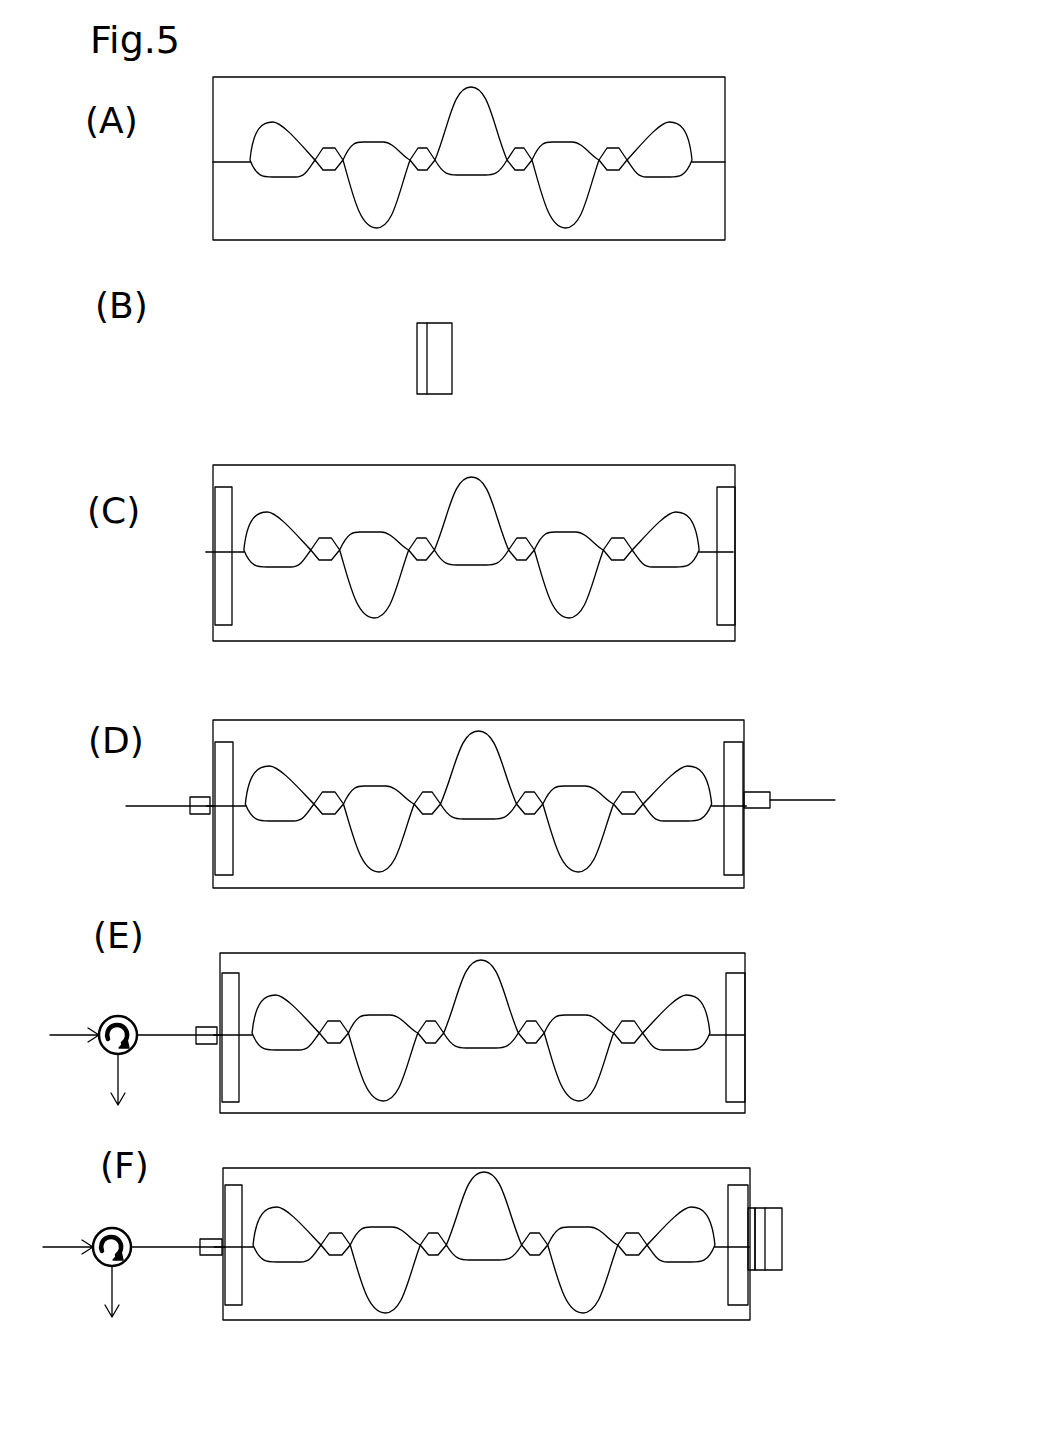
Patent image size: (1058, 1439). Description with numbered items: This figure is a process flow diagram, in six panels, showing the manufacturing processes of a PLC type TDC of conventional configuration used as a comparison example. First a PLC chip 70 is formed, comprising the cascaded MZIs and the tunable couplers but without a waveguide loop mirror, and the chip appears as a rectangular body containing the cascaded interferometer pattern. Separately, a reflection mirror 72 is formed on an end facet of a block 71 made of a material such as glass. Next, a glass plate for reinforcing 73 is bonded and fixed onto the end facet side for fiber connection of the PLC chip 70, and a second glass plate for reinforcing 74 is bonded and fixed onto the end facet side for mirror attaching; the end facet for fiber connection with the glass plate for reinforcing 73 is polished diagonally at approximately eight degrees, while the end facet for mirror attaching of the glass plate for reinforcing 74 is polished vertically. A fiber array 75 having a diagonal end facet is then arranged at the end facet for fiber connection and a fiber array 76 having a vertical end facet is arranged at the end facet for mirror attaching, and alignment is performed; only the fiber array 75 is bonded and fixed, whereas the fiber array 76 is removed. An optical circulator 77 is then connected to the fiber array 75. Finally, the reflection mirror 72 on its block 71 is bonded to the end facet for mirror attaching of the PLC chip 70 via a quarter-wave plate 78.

The PLC chip 70 is at (468, 66).
The block 71 is at (445, 352).
The reflection mirror 72 is at (422, 360).
The glass plate for reinforcing 73 is at (222, 545).
The glass plate for reinforcing 74 is at (730, 525).
The fiber array 75 is at (200, 803).
The fiber array 76 is at (758, 808).
The optical circulator 77 is at (118, 1015).
The quarter-wave plate 78 is at (752, 1208).